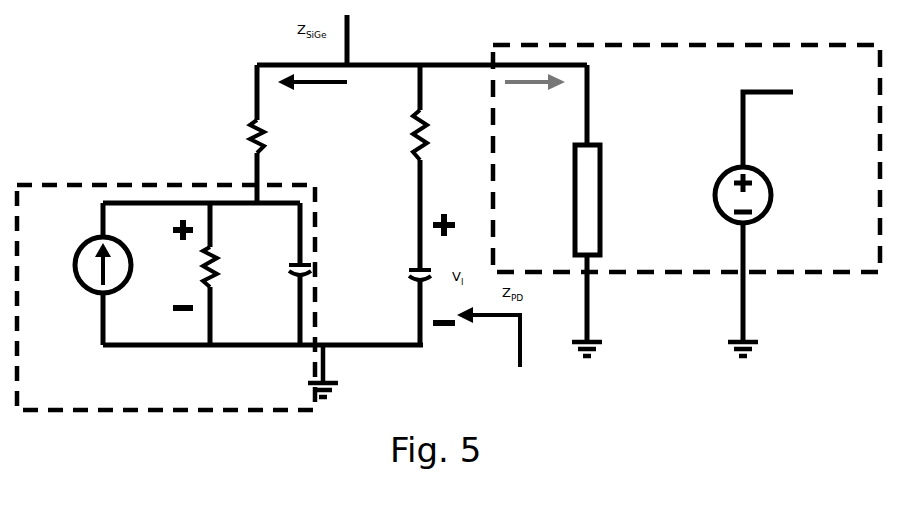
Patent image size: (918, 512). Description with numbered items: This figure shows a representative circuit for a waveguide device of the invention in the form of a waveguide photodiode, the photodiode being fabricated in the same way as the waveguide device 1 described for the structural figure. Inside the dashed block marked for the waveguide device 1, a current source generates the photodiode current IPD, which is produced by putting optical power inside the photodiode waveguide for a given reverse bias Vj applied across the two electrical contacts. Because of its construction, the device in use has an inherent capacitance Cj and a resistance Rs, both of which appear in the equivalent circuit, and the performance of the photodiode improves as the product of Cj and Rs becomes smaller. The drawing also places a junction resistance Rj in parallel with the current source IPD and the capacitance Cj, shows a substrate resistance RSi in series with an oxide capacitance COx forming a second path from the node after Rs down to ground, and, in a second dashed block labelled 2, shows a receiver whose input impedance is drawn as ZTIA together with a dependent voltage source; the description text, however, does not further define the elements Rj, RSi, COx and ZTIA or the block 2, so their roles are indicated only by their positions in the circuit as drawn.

The waveguide device 1 is at (220, 322).
The TIA receiver 2 is at (686, 184).
The photodiode current IPD is at (85, 265).
The junction resistance Rj is at (232, 267).
The inherent capacitance Cj is at (322, 259).
The resistance Rs is at (245, 136).
The silicon substrate resistance RSi is at (432, 135).
The oxide capacitance COx is at (390, 281).
The TIA input impedance ZTIA is at (607, 200).